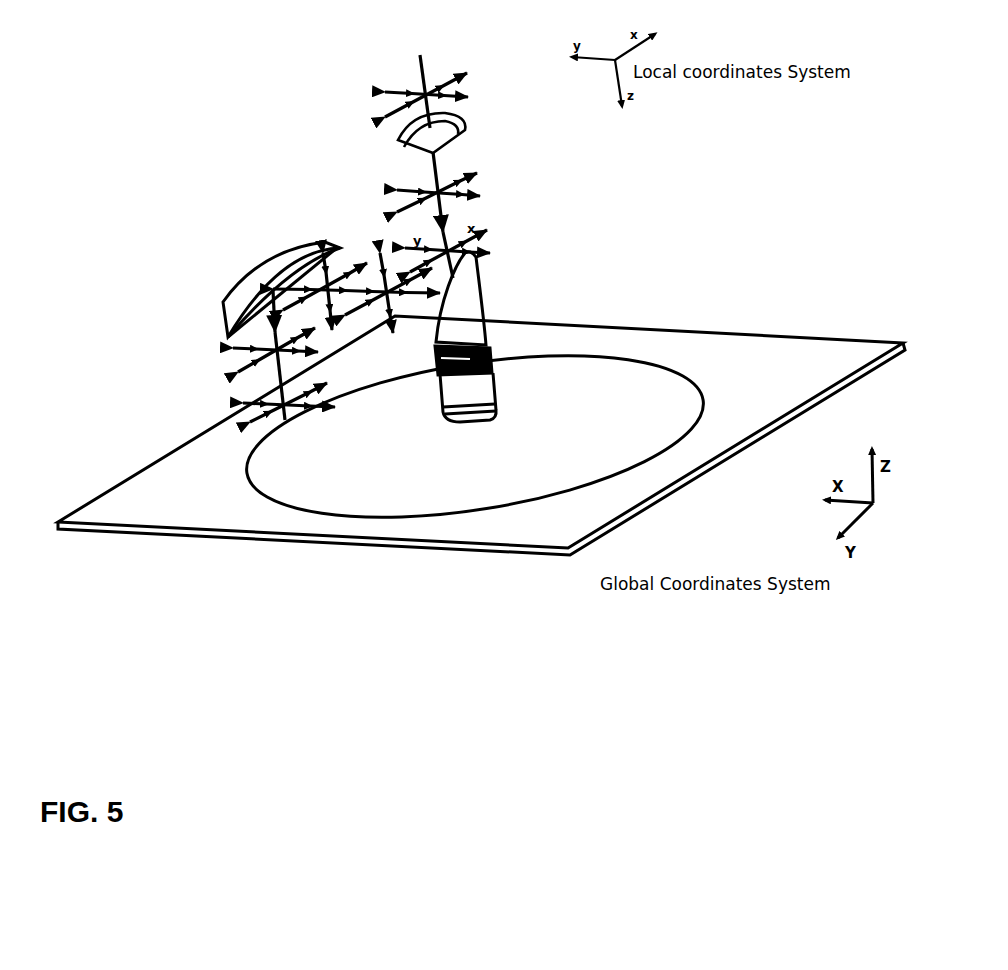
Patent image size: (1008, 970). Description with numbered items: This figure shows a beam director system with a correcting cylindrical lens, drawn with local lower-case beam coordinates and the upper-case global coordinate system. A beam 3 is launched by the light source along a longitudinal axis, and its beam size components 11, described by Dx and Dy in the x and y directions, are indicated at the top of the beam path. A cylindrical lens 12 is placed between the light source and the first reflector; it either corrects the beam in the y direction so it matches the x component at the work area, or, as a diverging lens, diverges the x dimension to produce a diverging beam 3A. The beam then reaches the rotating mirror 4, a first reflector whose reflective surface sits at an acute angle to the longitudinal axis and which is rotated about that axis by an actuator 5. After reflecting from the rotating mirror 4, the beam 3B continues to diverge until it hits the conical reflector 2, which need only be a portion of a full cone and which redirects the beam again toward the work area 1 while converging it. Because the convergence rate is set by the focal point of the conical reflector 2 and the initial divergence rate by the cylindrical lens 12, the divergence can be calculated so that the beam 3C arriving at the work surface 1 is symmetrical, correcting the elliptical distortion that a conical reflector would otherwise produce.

The work area 1 is at (213, 482).
The conical reflector 2 is at (265, 258).
The beam 3 is at (424, 70).
The diverging beam 3A is at (444, 175).
The beam after first reflector 3B is at (376, 290).
The beam at work surface 3C is at (277, 373).
The rotating mirror 4 is at (465, 302).
The actuator 5 is at (478, 390).
The beam size components 11 is at (413, 87).
The cylindrical lens 12 is at (402, 138).